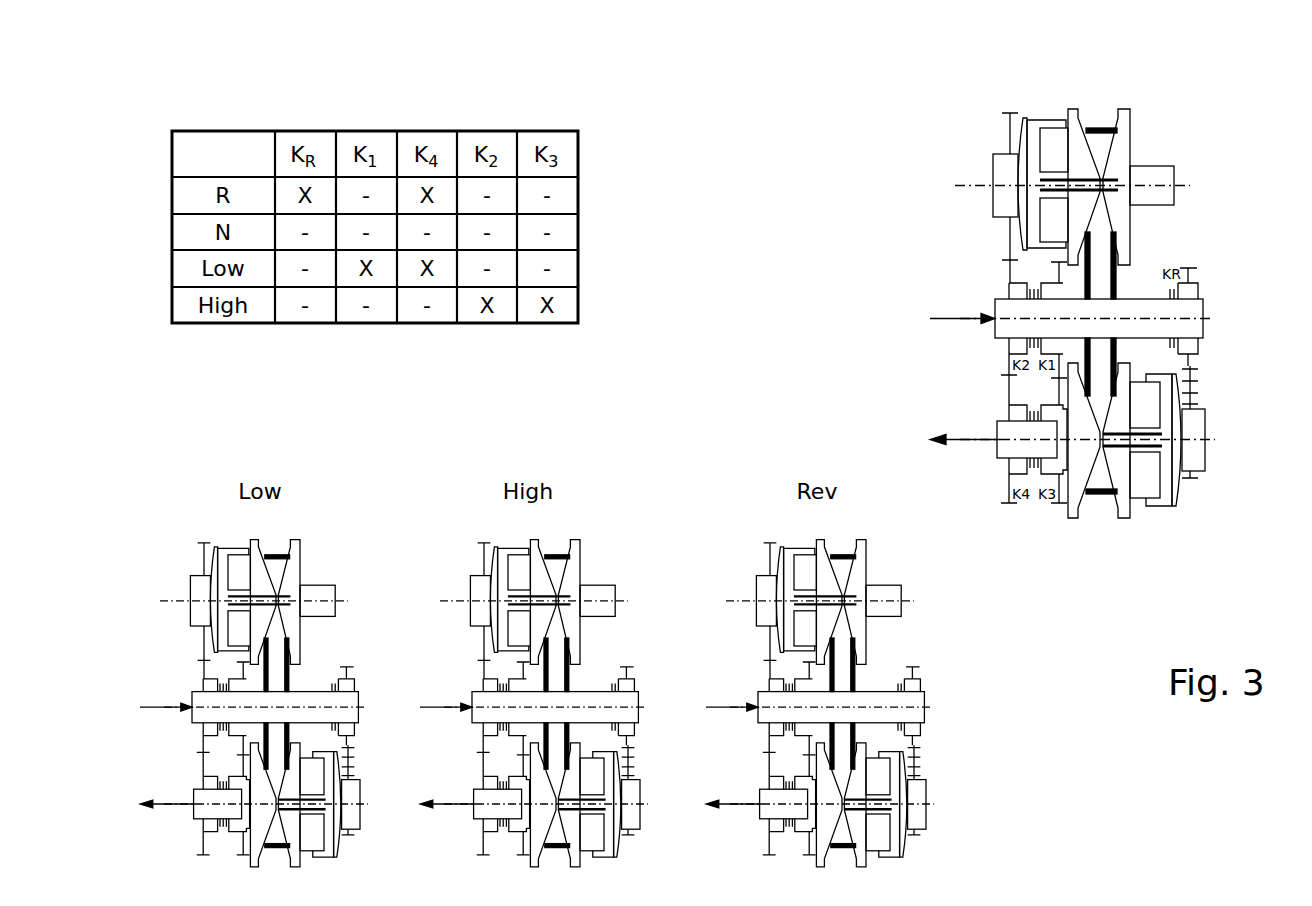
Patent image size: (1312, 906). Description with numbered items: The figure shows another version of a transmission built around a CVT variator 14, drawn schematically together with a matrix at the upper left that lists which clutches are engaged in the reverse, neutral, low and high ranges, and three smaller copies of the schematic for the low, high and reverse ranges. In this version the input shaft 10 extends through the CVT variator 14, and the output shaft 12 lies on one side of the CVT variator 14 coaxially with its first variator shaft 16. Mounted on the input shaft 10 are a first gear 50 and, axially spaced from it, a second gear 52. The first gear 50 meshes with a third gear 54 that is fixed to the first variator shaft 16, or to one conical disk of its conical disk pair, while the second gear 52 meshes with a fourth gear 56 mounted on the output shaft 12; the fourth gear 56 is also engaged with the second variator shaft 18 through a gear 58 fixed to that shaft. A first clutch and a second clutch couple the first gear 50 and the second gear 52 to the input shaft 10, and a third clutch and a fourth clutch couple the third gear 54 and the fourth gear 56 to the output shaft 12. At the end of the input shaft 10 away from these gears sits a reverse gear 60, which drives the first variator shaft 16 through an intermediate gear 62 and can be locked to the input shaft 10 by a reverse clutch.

The input shaft 10 is at (995, 327).
The output shaft 12 is at (1005, 453).
The CVT variator 14 is at (1102, 96).
The first variator shaft 16 is at (1195, 428).
The second variator shaft 18 is at (1166, 175).
The first gear 50 is at (1060, 362).
The second gear 52 is at (1003, 366).
The third gear 54 is at (1058, 512).
The fourth gear 56 is at (1008, 512).
The gear 58 is at (1003, 238).
The reverse gear 60 is at (1197, 270).
The intermediate gear 62 is at (1205, 378).